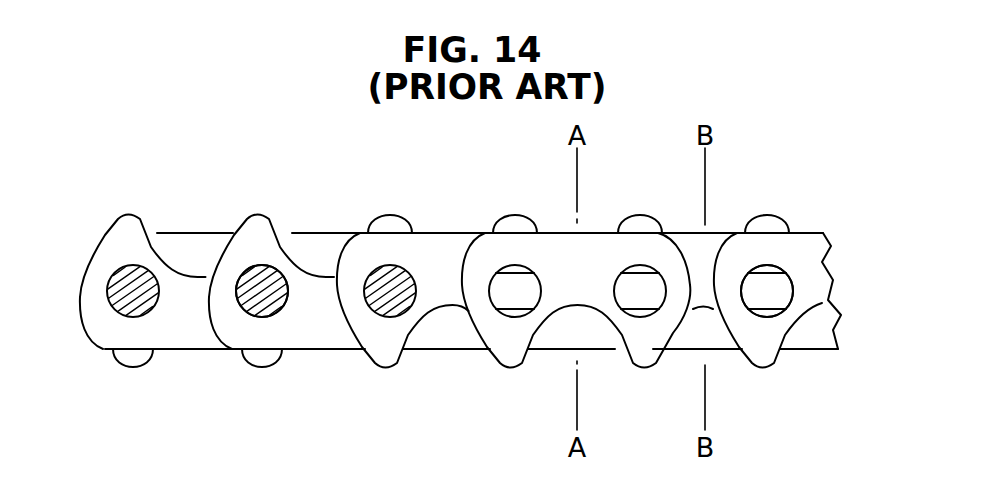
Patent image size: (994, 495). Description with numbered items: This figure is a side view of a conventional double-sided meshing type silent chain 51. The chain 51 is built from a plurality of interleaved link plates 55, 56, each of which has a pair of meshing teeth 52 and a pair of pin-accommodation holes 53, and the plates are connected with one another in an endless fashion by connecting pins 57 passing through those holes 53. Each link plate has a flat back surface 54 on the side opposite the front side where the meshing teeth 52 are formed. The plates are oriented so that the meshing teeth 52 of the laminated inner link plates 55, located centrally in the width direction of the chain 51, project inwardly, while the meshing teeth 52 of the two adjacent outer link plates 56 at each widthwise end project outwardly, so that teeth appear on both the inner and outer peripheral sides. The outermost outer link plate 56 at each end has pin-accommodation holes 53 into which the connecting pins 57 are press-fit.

The double-sided meshing type silent chain 51 is at (460, 274).
The meshing teeth 52 is at (262, 221).
The pin-accommodation holes 53 is at (247, 304).
The flat back surface 54 is at (345, 233).
The inner link plates 55 is at (180, 338).
The outer link plates 56 is at (322, 233).
The connecting pins 57 is at (243, 276).